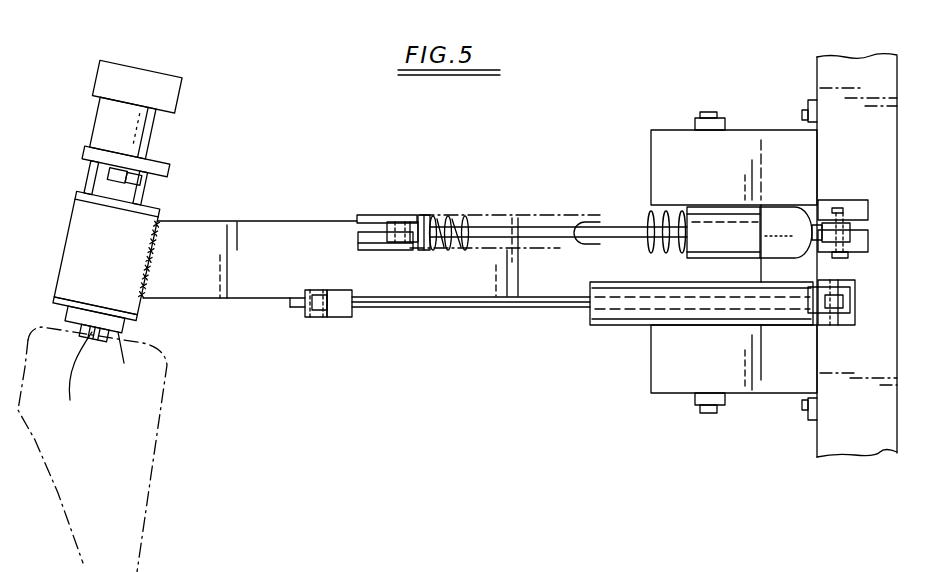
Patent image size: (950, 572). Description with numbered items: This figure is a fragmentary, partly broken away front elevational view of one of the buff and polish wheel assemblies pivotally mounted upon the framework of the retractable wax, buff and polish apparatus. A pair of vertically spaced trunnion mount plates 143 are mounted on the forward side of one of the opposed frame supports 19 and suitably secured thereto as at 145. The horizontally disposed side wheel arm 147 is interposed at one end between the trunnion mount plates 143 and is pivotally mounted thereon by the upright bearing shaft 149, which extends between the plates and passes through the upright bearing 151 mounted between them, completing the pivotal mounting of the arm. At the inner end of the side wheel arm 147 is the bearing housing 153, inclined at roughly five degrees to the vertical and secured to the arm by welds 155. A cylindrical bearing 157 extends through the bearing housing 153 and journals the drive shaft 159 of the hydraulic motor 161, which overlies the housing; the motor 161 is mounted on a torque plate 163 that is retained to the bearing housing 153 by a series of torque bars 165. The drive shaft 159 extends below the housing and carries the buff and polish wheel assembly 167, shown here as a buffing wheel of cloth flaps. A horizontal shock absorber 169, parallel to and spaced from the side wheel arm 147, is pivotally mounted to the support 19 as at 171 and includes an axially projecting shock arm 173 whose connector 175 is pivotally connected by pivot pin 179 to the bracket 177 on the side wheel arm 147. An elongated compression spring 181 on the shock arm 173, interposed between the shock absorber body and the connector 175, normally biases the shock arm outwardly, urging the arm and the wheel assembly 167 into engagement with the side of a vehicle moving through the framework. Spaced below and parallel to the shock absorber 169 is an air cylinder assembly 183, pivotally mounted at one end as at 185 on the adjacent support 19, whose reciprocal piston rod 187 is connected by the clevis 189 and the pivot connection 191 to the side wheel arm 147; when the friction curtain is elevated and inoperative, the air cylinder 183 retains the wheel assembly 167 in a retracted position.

The support 19 is at (855, 63).
The trunnion mount plates 143 is at (665, 135).
The securing means 145 is at (806, 122).
The side wheel arm 147 is at (287, 228).
The bearing shaft 149 is at (715, 112).
The bearing 151 is at (700, 298).
The bearing housing 153 is at (133, 250).
The welds 155 is at (148, 277).
The cylindrical bearing 157 is at (133, 193).
The drive shaft 159 is at (96, 382).
The hydraulic motor 161 is at (160, 77).
The torque plate 163 is at (168, 172).
The torque bars 165 is at (83, 170).
The buff and polish wheel assembly 167 is at (158, 484).
The shock absorber 169 is at (590, 222).
The pivotal mounting 171 is at (840, 205).
The shock arm 173 is at (549, 240).
The connector 175 is at (388, 226).
The bracket 177 is at (362, 250).
The pivot pin 179 is at (398, 214).
The compression spring 181 is at (460, 218).
The air cylinder assembly 183 is at (622, 323).
The pivotal mounting 185 is at (829, 325).
The piston rod 187 is at (465, 309).
The clevis 189 is at (353, 316).
The pivot connection 191 is at (321, 318).